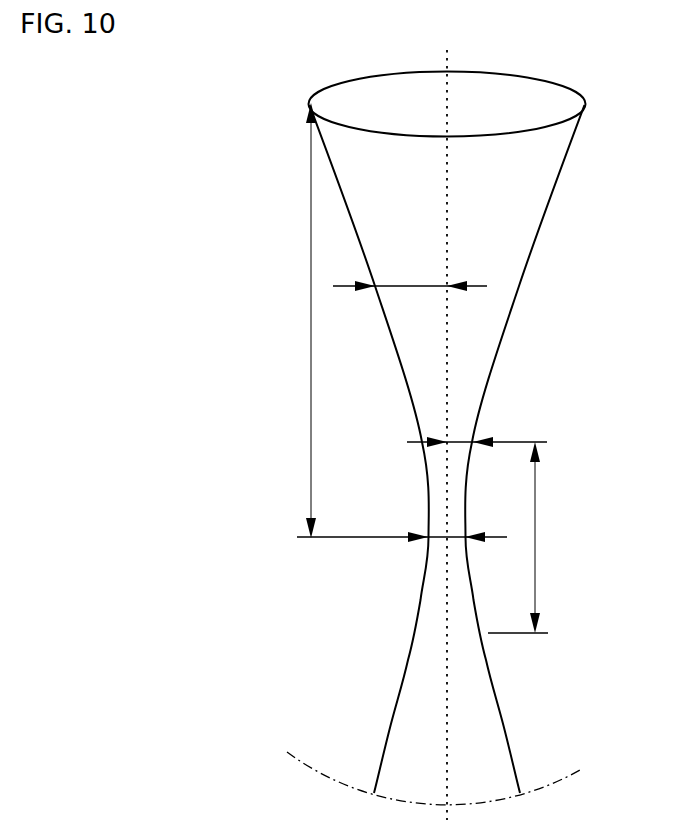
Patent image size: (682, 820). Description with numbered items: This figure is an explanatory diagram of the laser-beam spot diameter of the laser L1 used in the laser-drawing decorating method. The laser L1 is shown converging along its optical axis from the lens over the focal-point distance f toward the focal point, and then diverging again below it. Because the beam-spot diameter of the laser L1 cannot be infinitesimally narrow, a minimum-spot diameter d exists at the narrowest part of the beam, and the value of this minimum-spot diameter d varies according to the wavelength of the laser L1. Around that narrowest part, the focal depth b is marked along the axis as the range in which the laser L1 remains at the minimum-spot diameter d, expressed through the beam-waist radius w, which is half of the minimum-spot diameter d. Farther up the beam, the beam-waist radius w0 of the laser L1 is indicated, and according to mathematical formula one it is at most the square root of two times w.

The laser L1 is at (550, 200).
The focal-point distance f is at (302, 320).
The beam-waist radius W0 w0 is at (403, 288).
The focal depth b is at (526, 537).
The minimum-spot diameter d is at (437, 535).